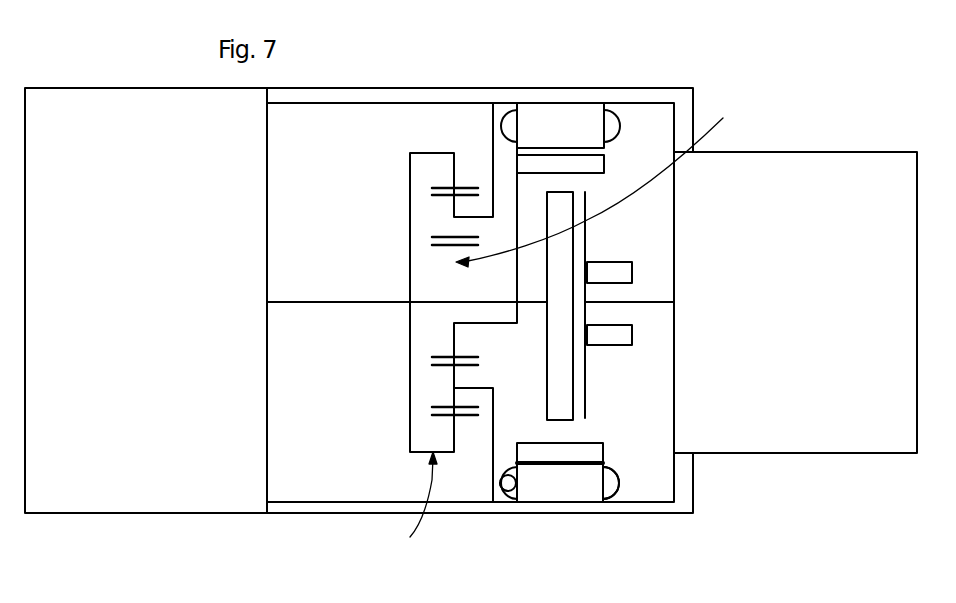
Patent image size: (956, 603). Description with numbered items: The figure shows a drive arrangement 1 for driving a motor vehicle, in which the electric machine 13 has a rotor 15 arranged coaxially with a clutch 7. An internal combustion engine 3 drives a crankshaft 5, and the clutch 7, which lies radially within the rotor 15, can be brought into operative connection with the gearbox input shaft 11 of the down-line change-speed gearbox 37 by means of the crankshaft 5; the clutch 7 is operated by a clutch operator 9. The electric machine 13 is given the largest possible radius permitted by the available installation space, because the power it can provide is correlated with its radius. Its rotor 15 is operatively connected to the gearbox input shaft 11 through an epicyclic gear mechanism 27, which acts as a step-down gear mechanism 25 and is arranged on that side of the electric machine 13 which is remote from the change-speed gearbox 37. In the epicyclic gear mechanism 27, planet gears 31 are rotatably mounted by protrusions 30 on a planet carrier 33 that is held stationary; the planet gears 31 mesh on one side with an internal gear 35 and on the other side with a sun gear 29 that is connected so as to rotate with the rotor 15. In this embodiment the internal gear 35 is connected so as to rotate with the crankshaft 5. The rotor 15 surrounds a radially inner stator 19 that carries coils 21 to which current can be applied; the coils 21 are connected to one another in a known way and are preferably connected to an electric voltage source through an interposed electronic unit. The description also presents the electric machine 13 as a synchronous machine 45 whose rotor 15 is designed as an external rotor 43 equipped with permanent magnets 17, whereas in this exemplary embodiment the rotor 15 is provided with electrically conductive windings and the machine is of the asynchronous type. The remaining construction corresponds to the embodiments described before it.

The drive arrangement 1 is at (104, 63).
The internal combustion engine 3 is at (130, 490).
The crankshaft 5 is at (320, 302).
The clutch 7 is at (573, 425).
The clutch operator 9 is at (617, 333).
The gearbox input shaft 11 is at (655, 307).
The electric machine 13 is at (617, 503).
The rotor 15 is at (540, 455).
The permanent magnets 17 is at (583, 167).
The stator 19 is at (505, 502).
The coils 21 is at (508, 503).
The step-down gear mechanism 25 is at (443, 152).
The epicyclic gear mechanism 27 is at (418, 507).
The sun gear 29 is at (601, 180).
The protrusions 30 is at (480, 215).
The planet gears 31 is at (450, 225).
The planet carrier 33 is at (473, 207).
The internal gear 35 is at (442, 257).
The change-speed gearbox 37 is at (808, 432).
The external rotor 43 is at (608, 110).
The synchronous machine 45 is at (618, 482).